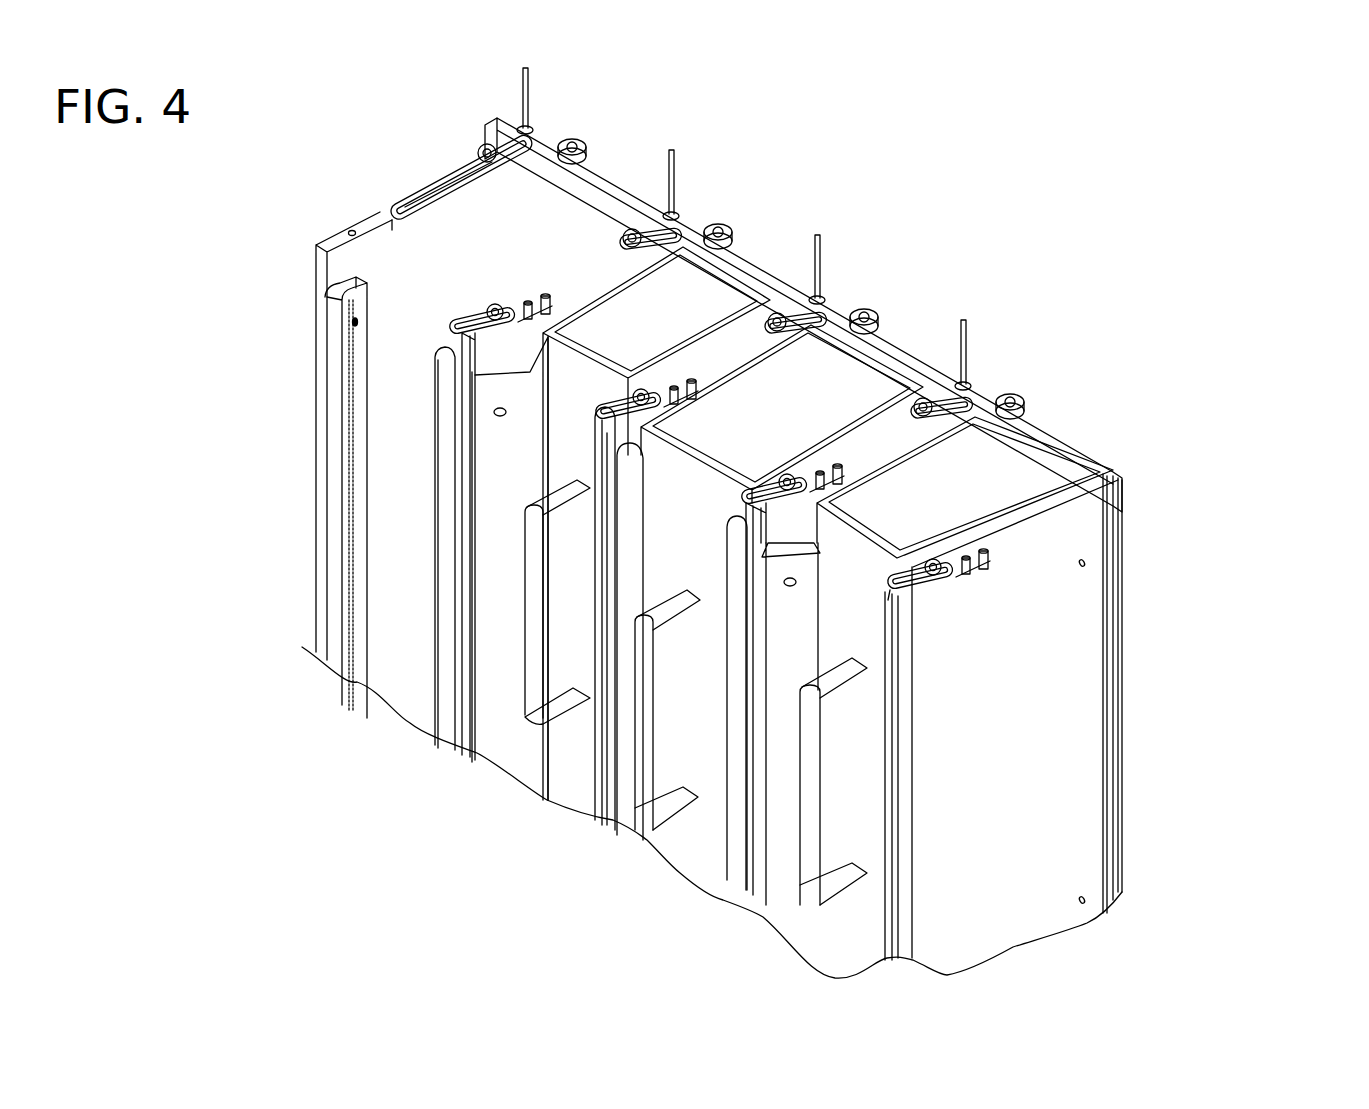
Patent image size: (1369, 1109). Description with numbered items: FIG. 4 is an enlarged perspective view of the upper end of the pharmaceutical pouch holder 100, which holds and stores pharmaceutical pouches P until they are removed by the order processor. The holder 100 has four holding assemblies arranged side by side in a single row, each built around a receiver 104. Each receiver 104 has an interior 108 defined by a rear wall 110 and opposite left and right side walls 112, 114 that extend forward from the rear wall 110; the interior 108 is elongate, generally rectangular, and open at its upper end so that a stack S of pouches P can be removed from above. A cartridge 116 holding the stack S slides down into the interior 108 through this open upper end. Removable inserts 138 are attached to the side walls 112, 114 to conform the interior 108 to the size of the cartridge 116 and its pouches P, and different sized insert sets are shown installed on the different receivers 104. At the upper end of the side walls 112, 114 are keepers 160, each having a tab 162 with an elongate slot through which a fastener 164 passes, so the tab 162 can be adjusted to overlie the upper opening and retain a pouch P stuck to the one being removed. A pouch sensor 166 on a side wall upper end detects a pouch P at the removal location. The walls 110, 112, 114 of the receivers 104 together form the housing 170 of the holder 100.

The holder 100 is at (1300, 210).
The receiver 104 is at (613, 160).
The interior 108 is at (420, 300).
The rear wall 110 is at (540, 147).
The left side wall 112 is at (332, 242).
The right side wall 114 is at (1080, 700).
The cartridge 116 is at (548, 765).
The inserts 138 is at (508, 205).
The keeper 160 is at (462, 125).
The tab 162 is at (900, 590).
The fastener 164 is at (942, 570).
The pouch sensor 166 is at (520, 300).
The housing 170 is at (1145, 558).
The pharmaceutical pouches P is at (666, 303).
The stack S is at (740, 285).